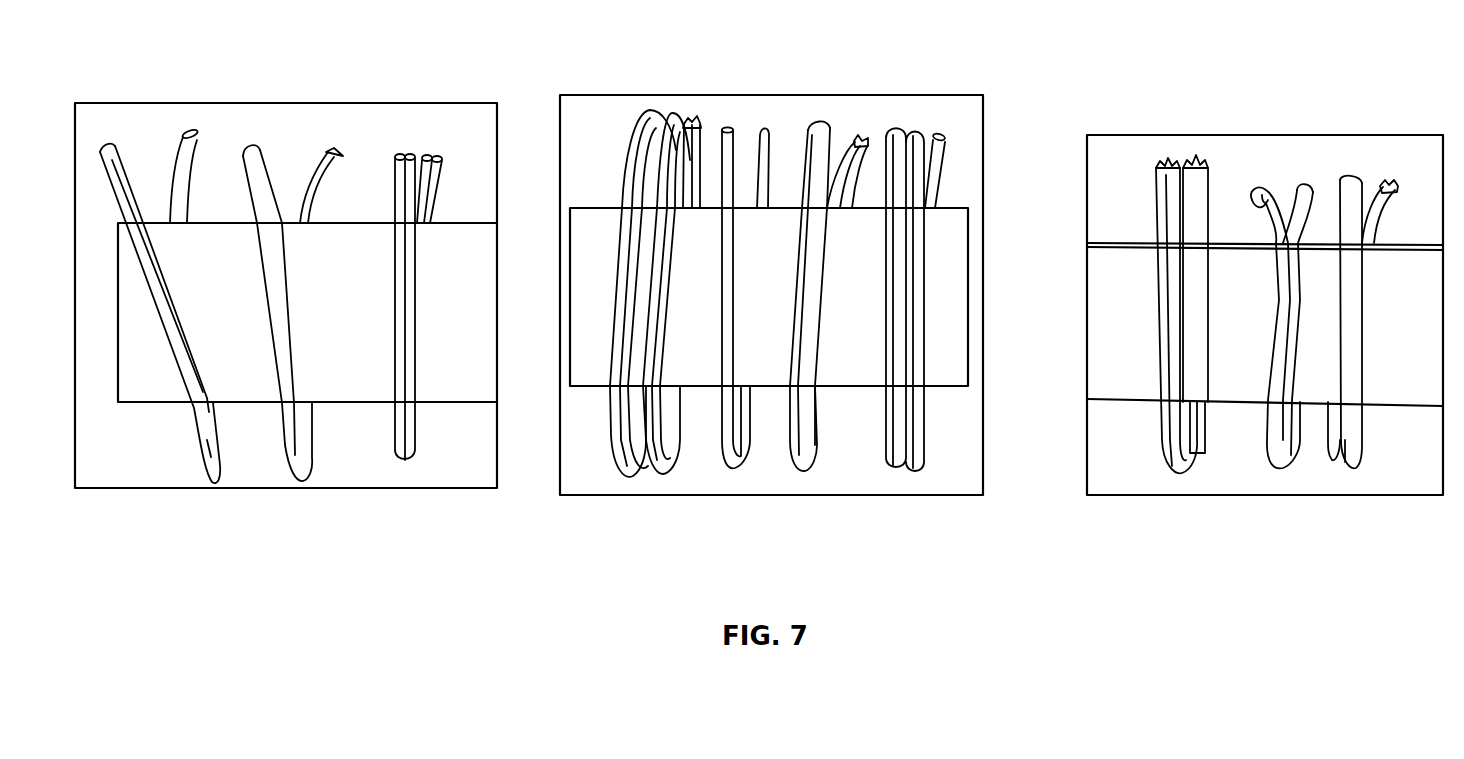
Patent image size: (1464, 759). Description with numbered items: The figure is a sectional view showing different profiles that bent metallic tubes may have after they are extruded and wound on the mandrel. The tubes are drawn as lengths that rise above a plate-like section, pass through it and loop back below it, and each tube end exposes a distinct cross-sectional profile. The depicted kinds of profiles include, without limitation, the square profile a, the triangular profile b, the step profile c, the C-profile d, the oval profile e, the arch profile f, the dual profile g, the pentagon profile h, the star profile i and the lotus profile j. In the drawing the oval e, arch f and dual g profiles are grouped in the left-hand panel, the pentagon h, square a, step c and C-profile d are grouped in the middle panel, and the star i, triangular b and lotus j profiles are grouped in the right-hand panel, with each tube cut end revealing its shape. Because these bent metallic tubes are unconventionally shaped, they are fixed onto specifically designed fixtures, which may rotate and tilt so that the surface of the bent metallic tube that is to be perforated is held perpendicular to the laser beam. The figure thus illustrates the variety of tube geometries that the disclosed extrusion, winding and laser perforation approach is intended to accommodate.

The oval profile e is at (192, 131).
The arch profile f is at (330, 150).
The dual profile g is at (403, 154).
The pentagon profile h is at (655, 112).
The square profile a is at (729, 129).
The step profile c is at (815, 125).
The C-profile d is at (903, 130).
The star profile i is at (1170, 162).
The triangular profile b is at (1266, 190).
The lotus profile j is at (1350, 178).